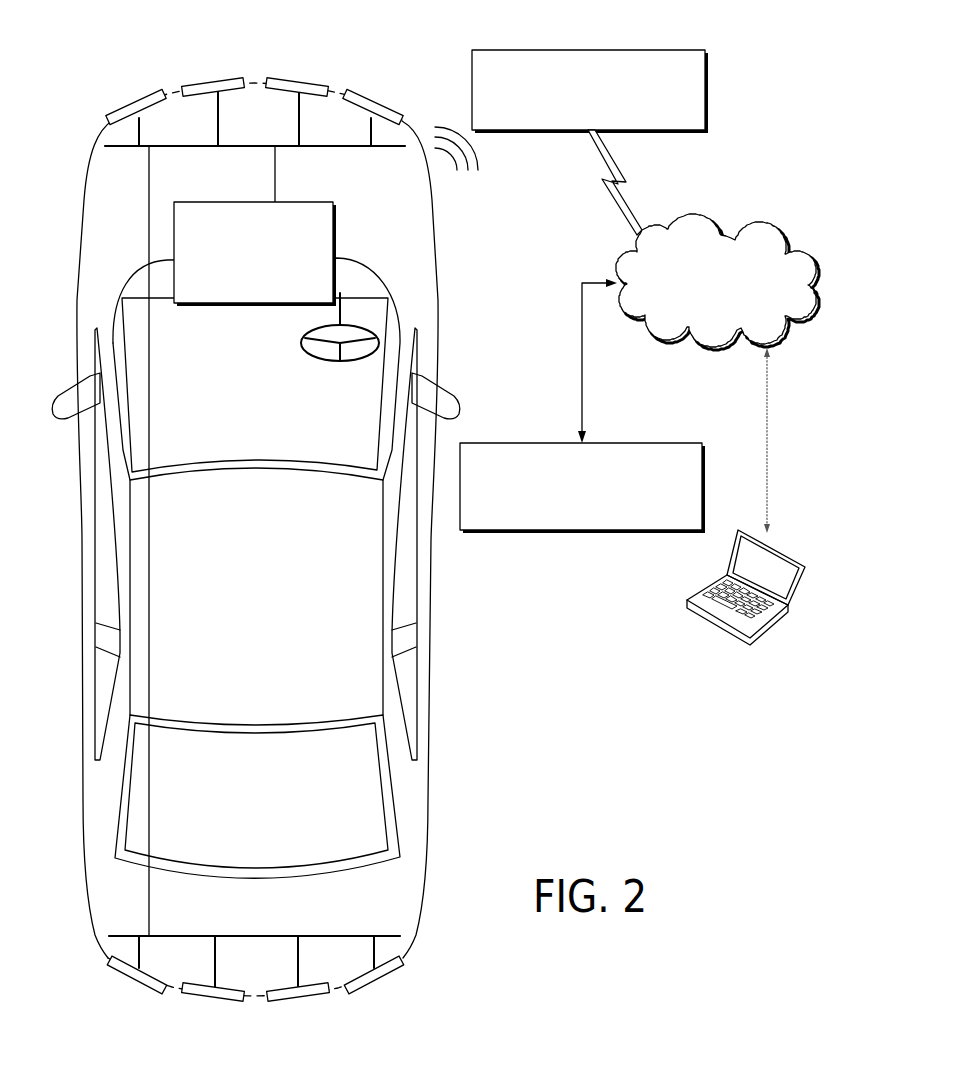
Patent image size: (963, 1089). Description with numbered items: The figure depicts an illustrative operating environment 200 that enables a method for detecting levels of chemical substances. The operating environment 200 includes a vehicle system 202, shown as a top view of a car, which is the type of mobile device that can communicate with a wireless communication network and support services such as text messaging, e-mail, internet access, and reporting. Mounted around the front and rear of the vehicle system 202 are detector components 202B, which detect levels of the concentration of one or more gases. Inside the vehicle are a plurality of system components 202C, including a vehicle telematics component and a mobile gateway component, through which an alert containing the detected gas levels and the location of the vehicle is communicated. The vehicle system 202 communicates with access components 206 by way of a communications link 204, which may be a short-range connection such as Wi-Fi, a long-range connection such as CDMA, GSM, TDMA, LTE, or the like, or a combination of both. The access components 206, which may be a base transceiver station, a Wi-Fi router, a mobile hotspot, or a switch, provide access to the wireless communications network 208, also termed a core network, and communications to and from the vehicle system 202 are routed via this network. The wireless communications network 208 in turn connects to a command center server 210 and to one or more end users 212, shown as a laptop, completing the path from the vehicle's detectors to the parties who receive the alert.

The operating environment 200 is at (494, 598).
The vehicle system 202 is at (14, 502).
The detector components 202B is at (138, 98).
The system components 202C is at (228, 304).
The communications link 204 is at (471, 163).
The access components 206 is at (672, 50).
The wireless communications network 208 is at (760, 221).
The command center server 210 is at (617, 443).
The end users 212 is at (788, 553).